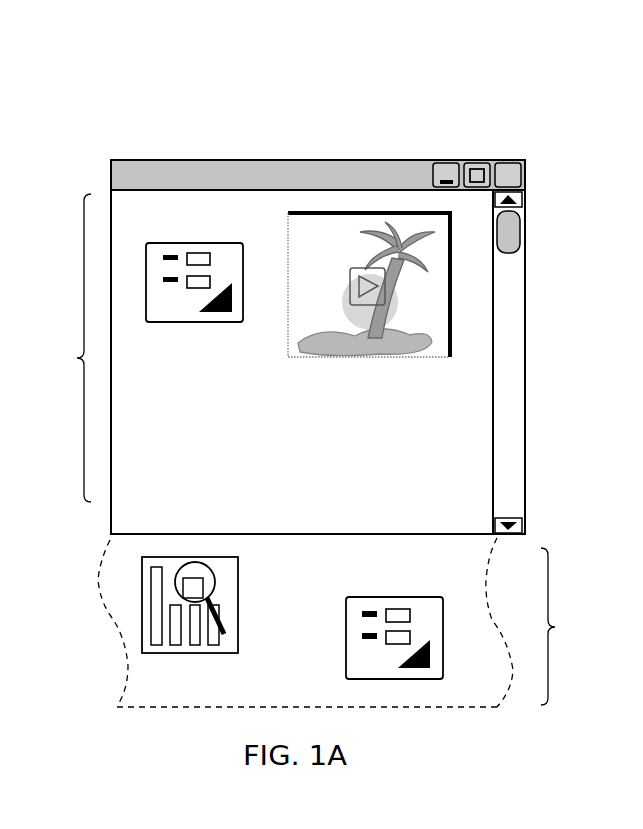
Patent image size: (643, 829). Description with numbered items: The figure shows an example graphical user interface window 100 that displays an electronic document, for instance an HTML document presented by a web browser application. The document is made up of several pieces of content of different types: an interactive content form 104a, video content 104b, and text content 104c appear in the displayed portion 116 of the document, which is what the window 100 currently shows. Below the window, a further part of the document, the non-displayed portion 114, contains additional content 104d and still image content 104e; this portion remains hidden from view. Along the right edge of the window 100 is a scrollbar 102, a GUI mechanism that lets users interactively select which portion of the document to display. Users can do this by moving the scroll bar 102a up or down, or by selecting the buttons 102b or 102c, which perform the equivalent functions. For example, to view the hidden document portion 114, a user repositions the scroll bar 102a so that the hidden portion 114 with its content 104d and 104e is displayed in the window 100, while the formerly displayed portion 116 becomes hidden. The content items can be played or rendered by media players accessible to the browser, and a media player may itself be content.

The graphical user interface window 100 is at (121, 154).
The scrollbar 102 is at (548, 362).
The scroll bar 102a is at (510, 232).
The button 102b is at (523, 200).
The button 102c is at (523, 526).
The interactive content form 104a is at (195, 324).
The video content 104b is at (288, 335).
The text content 104c is at (349, 401).
The content 104d is at (239, 573).
The still image content 104e is at (346, 633).
The non-displayed portion 114 is at (344, 622).
The displayed portion 116 is at (69, 348).